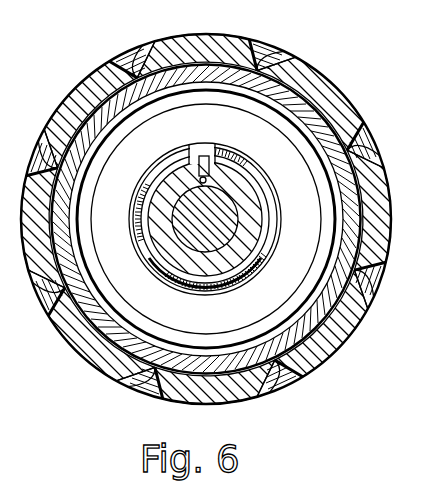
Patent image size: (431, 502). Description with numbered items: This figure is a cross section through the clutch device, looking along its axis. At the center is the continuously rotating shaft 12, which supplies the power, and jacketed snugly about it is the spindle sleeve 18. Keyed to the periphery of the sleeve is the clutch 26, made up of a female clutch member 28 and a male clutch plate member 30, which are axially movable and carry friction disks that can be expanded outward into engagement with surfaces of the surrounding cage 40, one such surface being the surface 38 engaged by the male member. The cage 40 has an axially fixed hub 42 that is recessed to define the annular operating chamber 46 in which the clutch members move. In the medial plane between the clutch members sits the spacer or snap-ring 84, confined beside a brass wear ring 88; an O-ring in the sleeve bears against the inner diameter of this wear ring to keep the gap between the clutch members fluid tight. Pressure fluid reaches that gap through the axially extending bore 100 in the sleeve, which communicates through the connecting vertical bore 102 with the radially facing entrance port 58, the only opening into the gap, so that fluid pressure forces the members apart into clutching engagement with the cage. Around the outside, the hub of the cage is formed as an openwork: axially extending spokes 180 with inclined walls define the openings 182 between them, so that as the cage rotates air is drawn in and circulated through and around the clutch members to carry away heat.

The shaft 12 is at (233, 215).
The spindle sleeve 18 is at (220, 176).
The clutch 26 is at (224, 325).
The female clutch member 28 is at (103, 329).
The male clutch plate member 30 is at (143, 315).
The surface of cage 38 is at (147, 372).
The cage 40 is at (350, 98).
The hub 42 is at (358, 122).
The operating chamber 46 is at (298, 100).
The entrance port 58 is at (208, 157).
The spacer or snap-ring 84 is at (188, 158).
The wear ring 88 is at (249, 279).
The axial bore 100 is at (202, 184).
The vertical bore 102 is at (201, 156).
The spoke 180 is at (197, 44).
The openings 182 is at (134, 60).